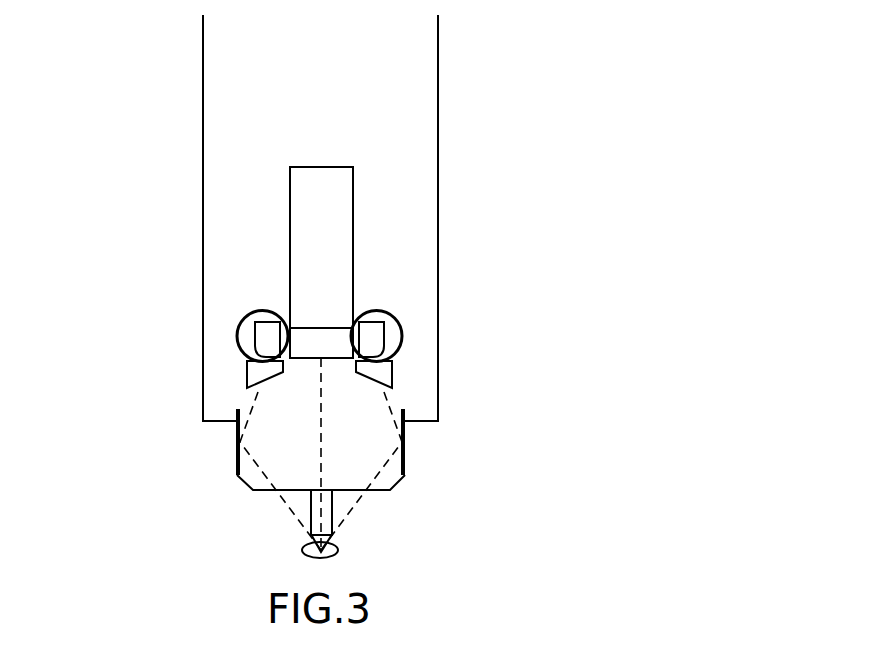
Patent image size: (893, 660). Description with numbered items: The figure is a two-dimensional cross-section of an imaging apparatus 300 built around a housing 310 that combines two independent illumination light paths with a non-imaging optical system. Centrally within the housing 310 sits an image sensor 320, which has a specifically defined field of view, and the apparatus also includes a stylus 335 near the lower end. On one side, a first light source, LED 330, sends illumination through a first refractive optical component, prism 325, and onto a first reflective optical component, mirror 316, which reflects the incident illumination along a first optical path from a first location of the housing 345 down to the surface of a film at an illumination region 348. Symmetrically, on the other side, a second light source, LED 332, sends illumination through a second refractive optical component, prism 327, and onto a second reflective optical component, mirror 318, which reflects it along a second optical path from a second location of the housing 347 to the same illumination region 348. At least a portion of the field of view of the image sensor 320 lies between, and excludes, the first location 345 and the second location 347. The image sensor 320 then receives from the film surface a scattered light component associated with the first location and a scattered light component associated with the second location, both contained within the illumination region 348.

The imaging apparatus 300 is at (90, 27).
The housing 310 is at (201, 173).
The image sensor 320 is at (355, 186).
The second light source (LED) 332 is at (266, 337).
The first light source (LED) 330 is at (387, 334).
The second location of the housing 347 is at (235, 342).
The first location of the housing 345 is at (405, 347).
The second refractive optical component (prism) 327 is at (247, 377).
The first refractive optical component (prism) 325 is at (396, 373).
The second reflective optical component (mirror) 318 is at (236, 463).
The first reflective optical component (mirror) 316 is at (406, 467).
The stylus 335 is at (344, 516).
The illumination region 348 is at (299, 549).